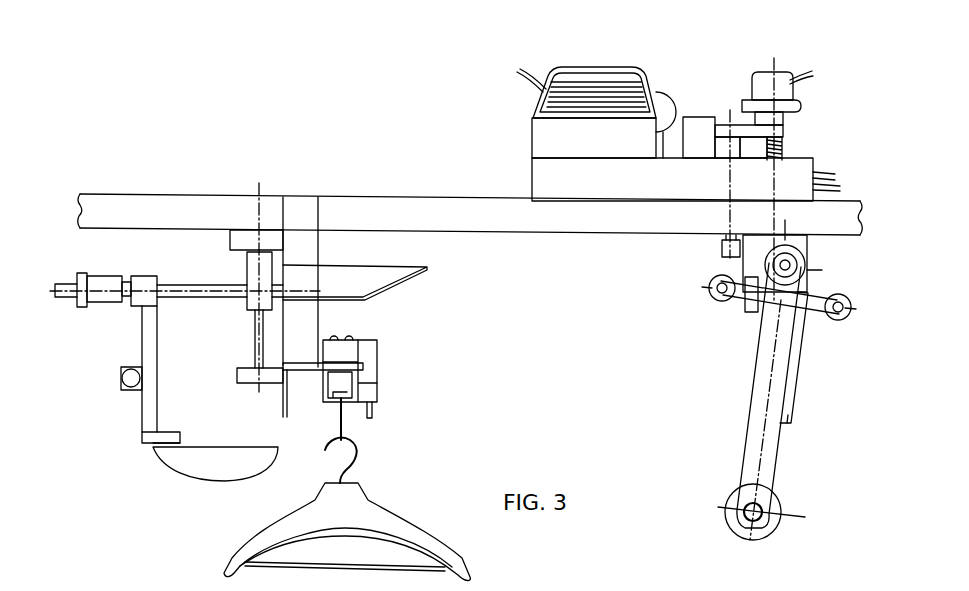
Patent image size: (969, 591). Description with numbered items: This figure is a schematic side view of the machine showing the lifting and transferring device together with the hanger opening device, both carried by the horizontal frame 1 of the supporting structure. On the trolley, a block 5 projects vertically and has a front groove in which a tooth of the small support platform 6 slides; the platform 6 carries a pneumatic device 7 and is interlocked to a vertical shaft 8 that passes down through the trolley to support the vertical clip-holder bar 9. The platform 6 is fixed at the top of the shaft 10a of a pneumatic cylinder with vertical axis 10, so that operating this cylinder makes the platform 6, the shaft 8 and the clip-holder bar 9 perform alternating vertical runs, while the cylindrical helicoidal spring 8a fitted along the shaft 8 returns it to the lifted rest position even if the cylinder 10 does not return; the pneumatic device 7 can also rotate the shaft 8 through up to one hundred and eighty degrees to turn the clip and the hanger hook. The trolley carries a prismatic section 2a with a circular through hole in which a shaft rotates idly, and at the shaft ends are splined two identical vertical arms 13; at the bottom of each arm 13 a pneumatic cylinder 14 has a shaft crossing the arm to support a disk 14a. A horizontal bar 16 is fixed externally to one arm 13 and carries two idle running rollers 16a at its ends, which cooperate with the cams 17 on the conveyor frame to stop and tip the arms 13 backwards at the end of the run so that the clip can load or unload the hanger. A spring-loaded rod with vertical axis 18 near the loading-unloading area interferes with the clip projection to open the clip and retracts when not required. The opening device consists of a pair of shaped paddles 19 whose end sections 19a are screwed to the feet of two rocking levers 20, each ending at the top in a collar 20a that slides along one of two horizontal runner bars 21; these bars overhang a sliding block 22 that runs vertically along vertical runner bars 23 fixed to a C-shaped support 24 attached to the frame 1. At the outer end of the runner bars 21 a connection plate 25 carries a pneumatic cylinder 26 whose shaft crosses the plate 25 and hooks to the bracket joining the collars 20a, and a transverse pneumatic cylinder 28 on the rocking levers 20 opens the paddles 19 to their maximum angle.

The horizontal frame 1 is at (354, 207).
The prismatic section 2a is at (806, 243).
The block 5 is at (700, 125).
The support platform 6 is at (721, 125).
The pneumatic device 7 is at (782, 82).
The vertical shaft 8 is at (783, 140).
The cylindrical helicoidal spring 8a is at (783, 150).
The clip-holder bar 9 is at (790, 403).
The pneumatic cylinder with vertical axis 10 is at (722, 255).
The shaft of pneumatic cylinder 10a is at (722, 158).
The vertical arms 13 is at (748, 457).
The pneumatic cylinder 14 is at (745, 513).
The disk 14a is at (778, 504).
The horizontal bar 16 is at (762, 314).
The idle running rollers 16a is at (715, 300).
The cams 17 is at (377, 283).
The rod with vertical axis 18 is at (375, 414).
The shaped paddles 19 is at (220, 470).
The end section 19a is at (150, 446).
The rocking levers 20 is at (147, 427).
The collar 20a is at (143, 297).
The horizontal runner bars 21 is at (185, 300).
The sliding block 22 is at (250, 268).
The vertical runner bars 23 is at (256, 352).
The C-shaped support 24 is at (240, 237).
The connection plate 25 is at (80, 271).
The pneumatic cylinder 26 is at (63, 283).
The pneumatic cylinder 28 is at (125, 388).